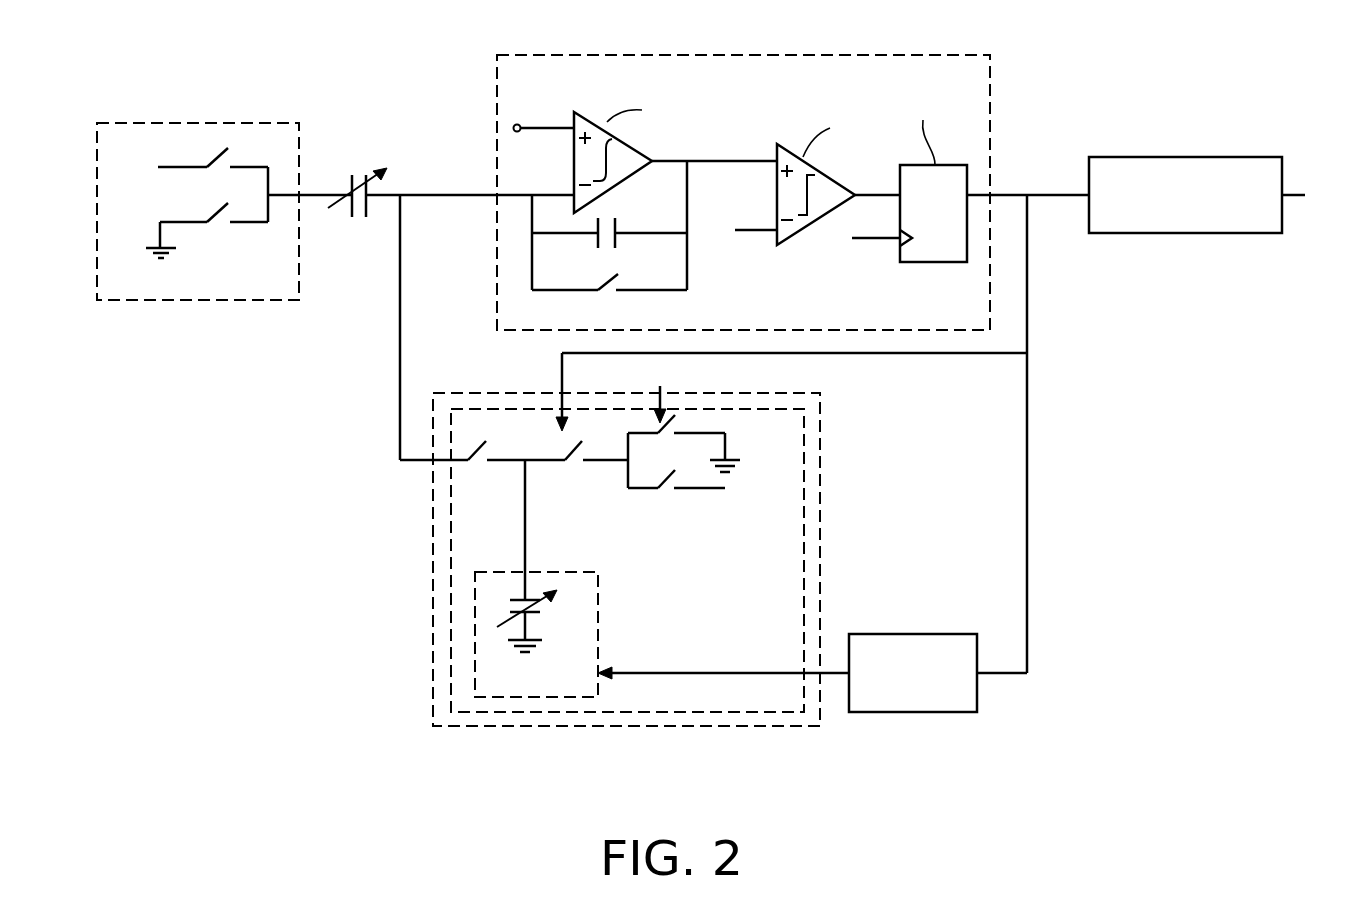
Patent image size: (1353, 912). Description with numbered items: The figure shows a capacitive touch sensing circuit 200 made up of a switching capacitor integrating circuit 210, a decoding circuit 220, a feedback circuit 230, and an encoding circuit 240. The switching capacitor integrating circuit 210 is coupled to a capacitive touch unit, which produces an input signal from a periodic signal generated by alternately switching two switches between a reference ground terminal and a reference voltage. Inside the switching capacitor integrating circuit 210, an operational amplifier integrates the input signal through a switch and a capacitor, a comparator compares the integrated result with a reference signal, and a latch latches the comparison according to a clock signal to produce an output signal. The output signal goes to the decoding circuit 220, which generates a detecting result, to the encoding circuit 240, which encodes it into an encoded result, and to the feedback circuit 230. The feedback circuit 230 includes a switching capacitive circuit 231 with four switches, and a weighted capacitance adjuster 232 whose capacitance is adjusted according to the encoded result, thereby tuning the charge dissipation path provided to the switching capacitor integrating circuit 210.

The capacitive touch sensing circuit 200 is at (1222, 755).
The switching capacitor integrating circuit 210 is at (878, 55).
The decoding circuit 220 is at (1160, 157).
The feedback circuit 230 is at (822, 455).
The switching capacitive circuit 231 is at (805, 527).
The weighted capacitance adjuster 232 is at (600, 600).
The encoding circuit 240 is at (912, 712).